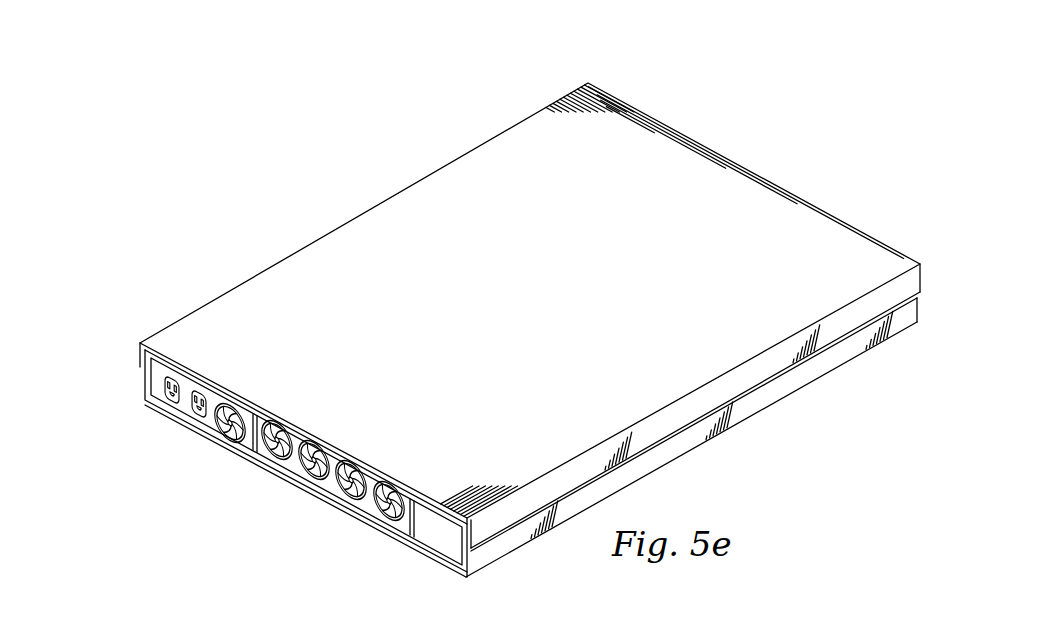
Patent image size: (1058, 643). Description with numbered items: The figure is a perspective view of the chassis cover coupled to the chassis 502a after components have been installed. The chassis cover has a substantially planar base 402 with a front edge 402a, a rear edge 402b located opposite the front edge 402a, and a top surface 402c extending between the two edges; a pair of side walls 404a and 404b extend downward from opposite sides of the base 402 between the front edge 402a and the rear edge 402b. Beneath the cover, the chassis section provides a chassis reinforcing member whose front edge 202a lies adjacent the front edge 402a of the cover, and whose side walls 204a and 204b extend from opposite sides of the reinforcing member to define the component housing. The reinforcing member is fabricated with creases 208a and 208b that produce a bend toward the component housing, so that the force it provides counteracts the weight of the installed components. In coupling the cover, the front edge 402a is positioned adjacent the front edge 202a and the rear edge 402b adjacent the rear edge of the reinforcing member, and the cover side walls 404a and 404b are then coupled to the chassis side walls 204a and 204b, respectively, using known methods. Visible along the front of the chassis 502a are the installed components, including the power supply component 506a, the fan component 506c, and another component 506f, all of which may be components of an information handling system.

The base 402 is at (660, 122).
The front edge 402a is at (228, 391).
The rear edge 402b is at (789, 187).
The top surface 402c is at (560, 307).
The side wall 404a is at (140, 352).
The side wall 404b is at (760, 377).
The side wall 204a is at (146, 390).
The side wall 204b is at (667, 450).
The front edge 202a is at (303, 488).
The crease 208a is at (250, 453).
The crease 208b is at (359, 514).
The chassis 502a is at (376, 166).
The power supply component 506a is at (213, 425).
The fan component 506c is at (297, 428).
The other component 506f is at (437, 539).